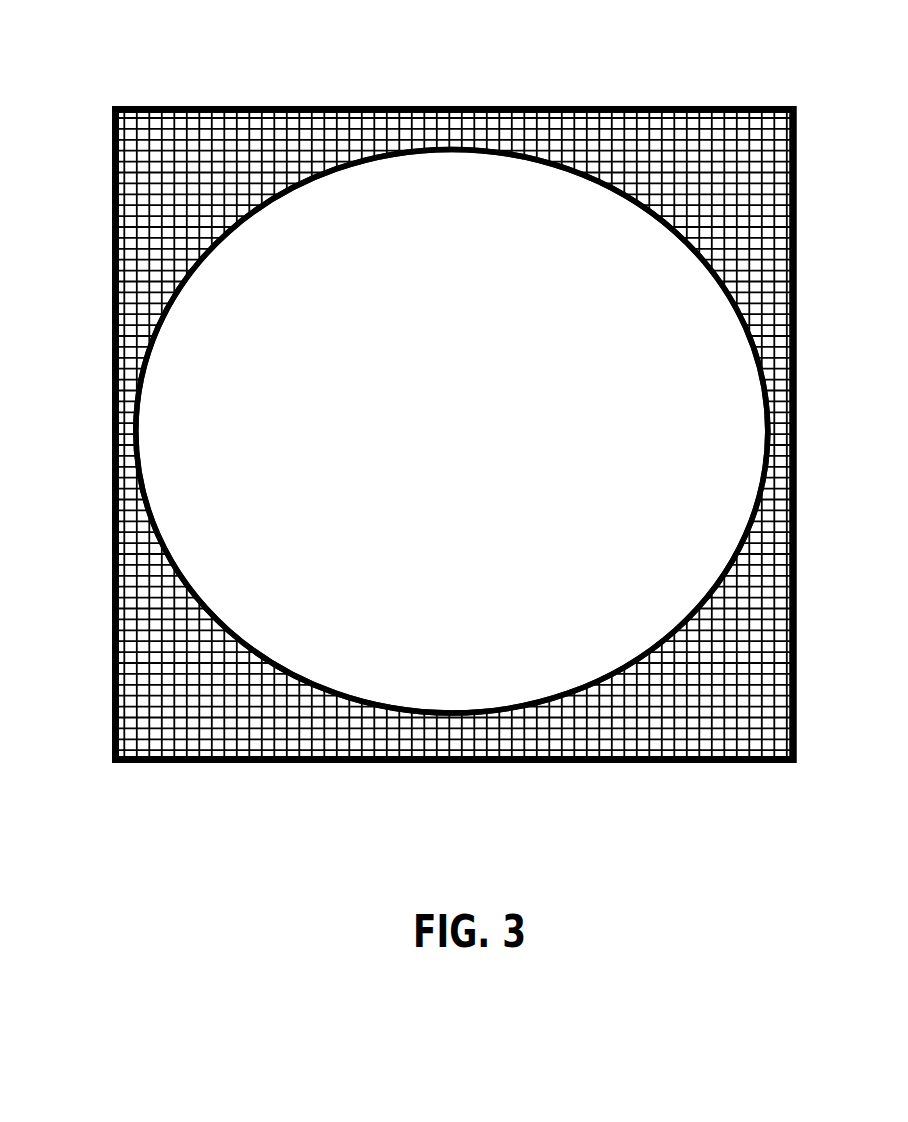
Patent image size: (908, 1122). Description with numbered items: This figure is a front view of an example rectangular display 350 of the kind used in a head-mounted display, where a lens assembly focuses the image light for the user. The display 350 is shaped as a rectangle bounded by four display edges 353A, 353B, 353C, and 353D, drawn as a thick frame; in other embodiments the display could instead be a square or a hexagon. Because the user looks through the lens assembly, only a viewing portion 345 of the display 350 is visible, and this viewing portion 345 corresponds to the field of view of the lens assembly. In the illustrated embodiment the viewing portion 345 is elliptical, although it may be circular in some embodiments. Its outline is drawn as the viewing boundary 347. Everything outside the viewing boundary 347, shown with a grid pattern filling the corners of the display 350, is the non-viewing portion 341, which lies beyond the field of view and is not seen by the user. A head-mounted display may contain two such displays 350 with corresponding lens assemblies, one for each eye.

The non-viewing portion 341 is at (199, 176).
The viewing portion 345 is at (476, 436).
The viewing boundary 347 is at (211, 254).
The display 350 is at (795, 106).
The display edge 353A is at (300, 105).
The display edge 353B is at (798, 389).
The display edge 353C is at (668, 764).
The display edge 353D is at (111, 556).